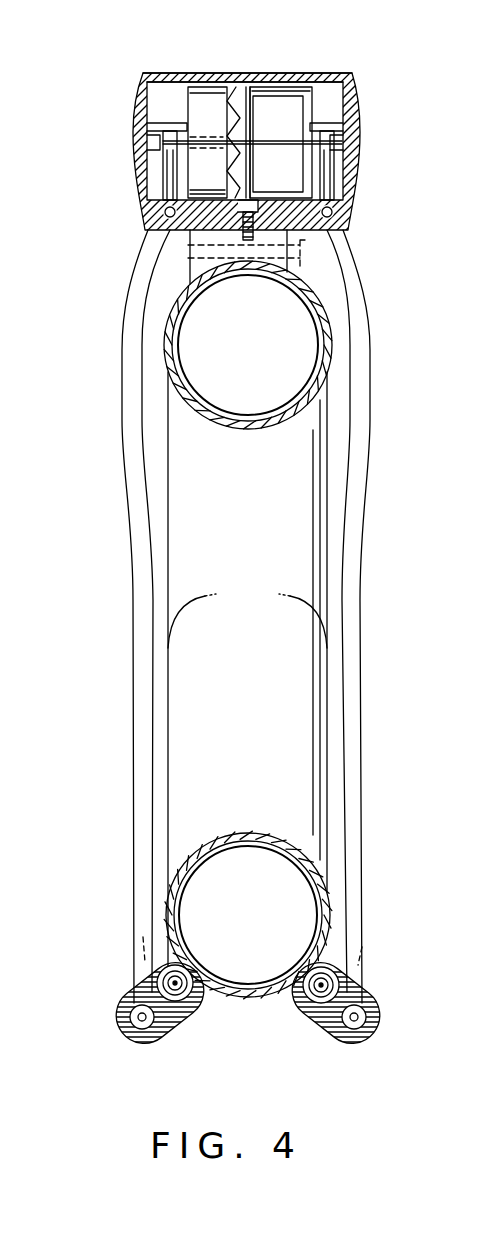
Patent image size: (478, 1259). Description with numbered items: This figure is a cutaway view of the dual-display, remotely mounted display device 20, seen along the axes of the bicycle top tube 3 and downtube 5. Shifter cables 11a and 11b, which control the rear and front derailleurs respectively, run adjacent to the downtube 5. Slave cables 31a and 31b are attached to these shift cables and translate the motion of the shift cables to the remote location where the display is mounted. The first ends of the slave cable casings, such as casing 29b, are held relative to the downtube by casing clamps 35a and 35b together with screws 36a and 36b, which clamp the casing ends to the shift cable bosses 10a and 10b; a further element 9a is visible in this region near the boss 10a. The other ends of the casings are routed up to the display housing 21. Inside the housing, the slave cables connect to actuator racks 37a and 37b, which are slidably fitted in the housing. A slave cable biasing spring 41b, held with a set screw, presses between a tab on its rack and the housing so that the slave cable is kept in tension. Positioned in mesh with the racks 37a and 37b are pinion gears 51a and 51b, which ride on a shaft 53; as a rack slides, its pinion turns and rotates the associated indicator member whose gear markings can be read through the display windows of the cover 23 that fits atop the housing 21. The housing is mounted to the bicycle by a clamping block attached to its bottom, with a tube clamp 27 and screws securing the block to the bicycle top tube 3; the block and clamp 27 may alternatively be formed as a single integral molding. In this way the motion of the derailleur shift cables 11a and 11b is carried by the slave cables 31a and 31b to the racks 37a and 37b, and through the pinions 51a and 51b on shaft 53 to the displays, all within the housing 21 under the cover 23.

The display device 20 is at (239, 125).
The display housing 21 is at (362, 171).
The cover 23 is at (350, 88).
The bicycle top tube 3 is at (322, 332).
The downtube 5 is at (228, 833).
The tube clamp 27 is at (333, 363).
The slave cable casing 29b is at (130, 440).
The pinion gear 51b is at (167, 123).
The pinion gear 51a is at (330, 127).
The actuator rack 37b is at (170, 168).
The actuator rack 37a is at (330, 187).
The shaft 53 is at (337, 144).
The slave cable biasing spring 41b is at (157, 213).
The screw 36b is at (143, 937).
The screw 36a is at (362, 947).
The casing clamp 35b is at (118, 1005).
The casing clamp 35a is at (370, 1007).
The slave cable 31b is at (122, 1020).
The slave cable 31a is at (340, 1028).
The shift cable boss 10b is at (192, 990).
The shift cable boss 10a is at (318, 988).
The shifter cable 11b is at (176, 988).
The shifter cable 11a is at (313, 992).
The pivot axis 9a is at (317, 992).